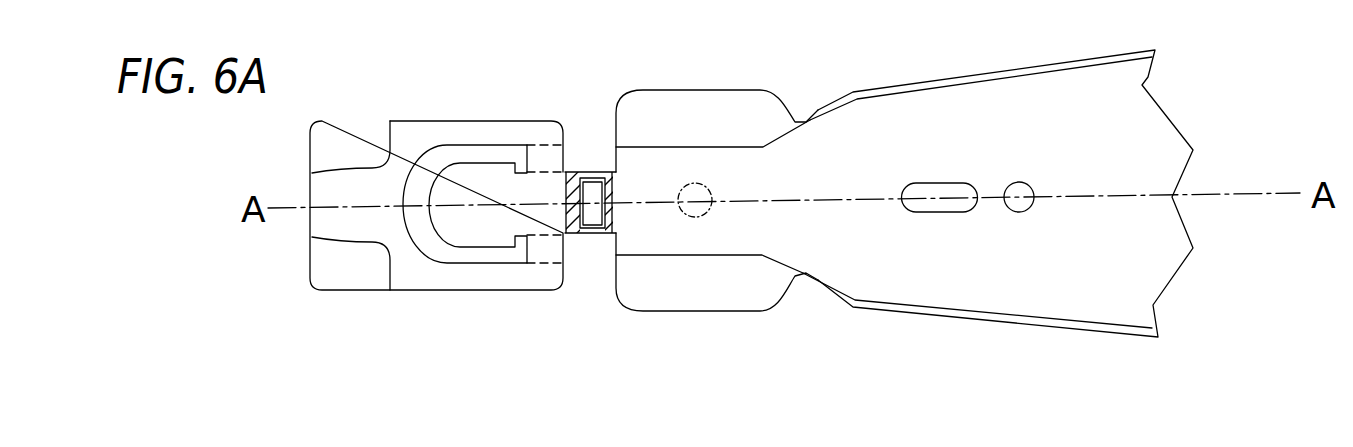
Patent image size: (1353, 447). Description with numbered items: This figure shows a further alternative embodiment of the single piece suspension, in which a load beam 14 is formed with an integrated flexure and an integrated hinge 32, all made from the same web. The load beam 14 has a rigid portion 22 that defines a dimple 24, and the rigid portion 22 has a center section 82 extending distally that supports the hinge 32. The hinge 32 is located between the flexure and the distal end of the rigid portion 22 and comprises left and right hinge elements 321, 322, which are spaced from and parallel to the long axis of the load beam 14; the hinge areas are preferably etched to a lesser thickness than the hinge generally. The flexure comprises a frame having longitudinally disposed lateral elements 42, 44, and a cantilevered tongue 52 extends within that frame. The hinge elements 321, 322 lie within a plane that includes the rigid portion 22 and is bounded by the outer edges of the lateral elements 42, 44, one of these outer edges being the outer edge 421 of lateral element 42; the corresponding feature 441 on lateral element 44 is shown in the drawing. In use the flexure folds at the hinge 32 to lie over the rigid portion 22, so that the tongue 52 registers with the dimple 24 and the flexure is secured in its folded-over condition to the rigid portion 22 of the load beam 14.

The load beam 14 is at (985, 318).
The rigid portion 22 is at (825, 241).
The dimple 24 is at (697, 198).
The hinge 32 is at (602, 171).
The left hinge element 321 is at (590, 171).
The right hinge element 322 is at (595, 233).
The lateral element 42 is at (425, 130).
The outer edge 421 is at (482, 119).
The lateral element 44 is at (488, 277).
The lower jaw groove 441 is at (430, 290).
The tongue 52 is at (497, 197).
The center section 82 is at (606, 203).